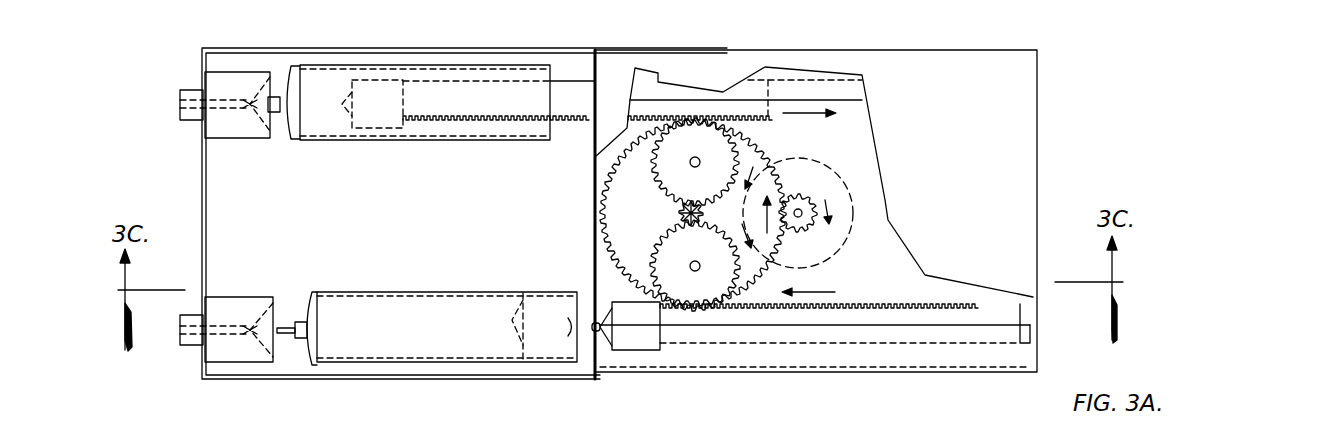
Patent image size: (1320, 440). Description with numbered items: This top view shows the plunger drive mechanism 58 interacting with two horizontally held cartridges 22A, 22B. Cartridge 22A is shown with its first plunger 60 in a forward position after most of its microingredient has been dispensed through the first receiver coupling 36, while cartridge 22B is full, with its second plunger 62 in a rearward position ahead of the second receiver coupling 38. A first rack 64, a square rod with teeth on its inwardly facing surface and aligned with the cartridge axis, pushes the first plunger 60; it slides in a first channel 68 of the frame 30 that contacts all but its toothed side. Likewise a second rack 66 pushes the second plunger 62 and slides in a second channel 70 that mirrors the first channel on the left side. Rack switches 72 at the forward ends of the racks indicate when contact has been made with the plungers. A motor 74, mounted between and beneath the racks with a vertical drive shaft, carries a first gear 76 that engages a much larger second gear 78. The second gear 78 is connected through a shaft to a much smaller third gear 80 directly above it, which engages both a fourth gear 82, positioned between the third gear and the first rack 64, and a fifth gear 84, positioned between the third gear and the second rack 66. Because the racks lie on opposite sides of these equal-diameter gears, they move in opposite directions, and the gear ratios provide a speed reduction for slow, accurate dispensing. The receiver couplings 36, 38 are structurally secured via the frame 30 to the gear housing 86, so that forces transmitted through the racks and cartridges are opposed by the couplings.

The cartridge 22A is at (470, 140).
The cartridge 22B is at (467, 291).
The frame 30 is at (567, 378).
The first receiver coupling 36 is at (215, 123).
The second receiver coupling 38 is at (237, 297).
The plunger drive mechanism 58 is at (1161, 96).
The first plunger 60 is at (332, 128).
The second plunger 62 is at (525, 343).
The first rack 64 is at (572, 105).
The second rack 66 is at (925, 315).
The first channel 68 is at (850, 88).
The second channel 70 is at (1010, 332).
The rack switch 72 is at (598, 331).
The motor 74 is at (853, 212).
The first gear 76 is at (806, 207).
The second gear 78 is at (767, 153).
The third gear 80 is at (687, 213).
The fourth gear 82 is at (675, 153).
The fifth gear 84 is at (700, 290).
The gear housing 86 is at (1037, 178).